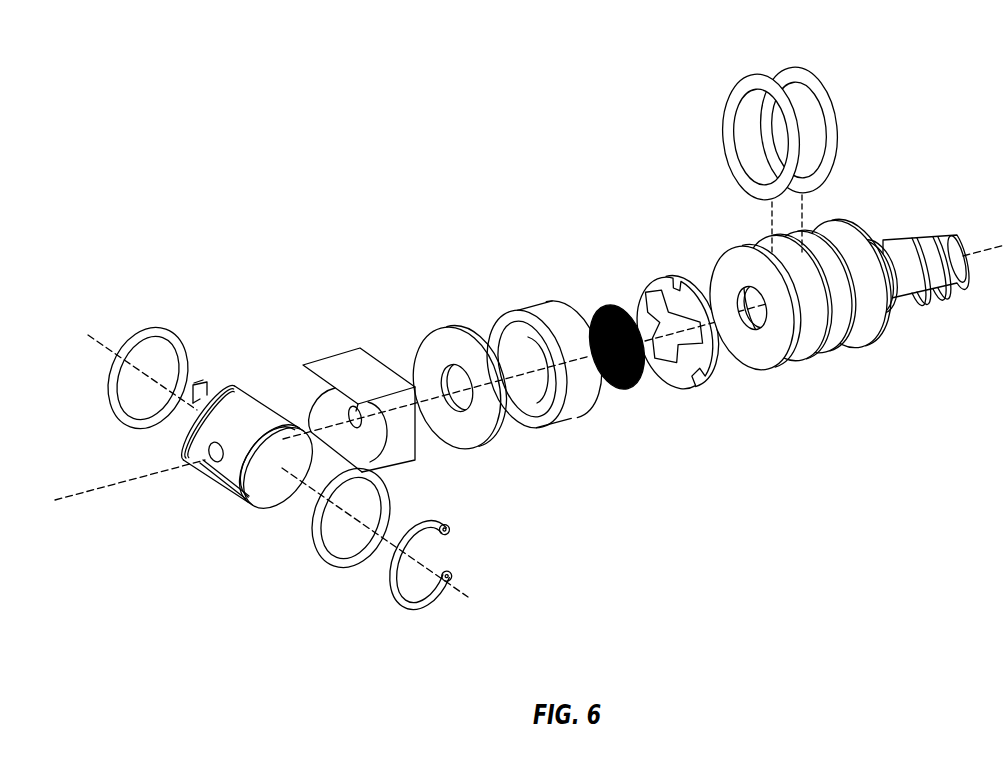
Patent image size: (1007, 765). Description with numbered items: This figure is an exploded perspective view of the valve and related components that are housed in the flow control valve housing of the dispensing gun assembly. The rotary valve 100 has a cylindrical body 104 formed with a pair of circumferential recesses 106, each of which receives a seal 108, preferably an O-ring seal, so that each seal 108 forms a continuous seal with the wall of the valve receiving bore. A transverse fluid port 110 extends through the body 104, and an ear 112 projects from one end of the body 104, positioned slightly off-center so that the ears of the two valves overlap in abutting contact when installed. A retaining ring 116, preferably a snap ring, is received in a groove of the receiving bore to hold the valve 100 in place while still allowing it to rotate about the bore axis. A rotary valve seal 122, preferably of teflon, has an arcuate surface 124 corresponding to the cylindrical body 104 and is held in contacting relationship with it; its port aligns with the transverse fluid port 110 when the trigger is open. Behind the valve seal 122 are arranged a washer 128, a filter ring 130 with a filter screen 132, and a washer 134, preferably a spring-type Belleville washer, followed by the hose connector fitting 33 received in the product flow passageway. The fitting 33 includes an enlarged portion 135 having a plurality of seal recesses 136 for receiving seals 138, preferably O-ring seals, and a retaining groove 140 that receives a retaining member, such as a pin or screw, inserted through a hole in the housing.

The hose connector fitting 33 is at (940, 236).
The first rotary valve 100 is at (235, 477).
The cylindrical body 104 is at (232, 473).
The circumferential recesses 106 is at (278, 411).
The seal 108 is at (113, 399).
The transverse fluid port 110 is at (212, 448).
The ear 112 is at (202, 385).
The retaining ring 116 is at (391, 577).
The rotary valve seal 122 is at (345, 367).
The arcuate surface 124 is at (375, 448).
The washer 128 is at (447, 328).
The filter ring 130 is at (542, 303).
The filter screen 132 is at (623, 393).
The washer 134 is at (670, 277).
The enlarged portion 135 is at (852, 293).
The seal recesses 136 is at (805, 302).
The seals 138 is at (793, 67).
The retaining groove 140 is at (873, 297).